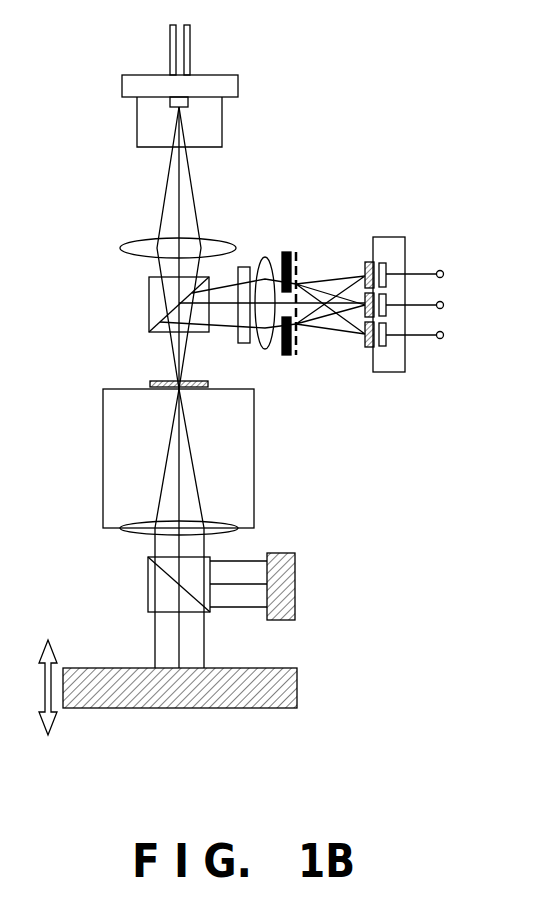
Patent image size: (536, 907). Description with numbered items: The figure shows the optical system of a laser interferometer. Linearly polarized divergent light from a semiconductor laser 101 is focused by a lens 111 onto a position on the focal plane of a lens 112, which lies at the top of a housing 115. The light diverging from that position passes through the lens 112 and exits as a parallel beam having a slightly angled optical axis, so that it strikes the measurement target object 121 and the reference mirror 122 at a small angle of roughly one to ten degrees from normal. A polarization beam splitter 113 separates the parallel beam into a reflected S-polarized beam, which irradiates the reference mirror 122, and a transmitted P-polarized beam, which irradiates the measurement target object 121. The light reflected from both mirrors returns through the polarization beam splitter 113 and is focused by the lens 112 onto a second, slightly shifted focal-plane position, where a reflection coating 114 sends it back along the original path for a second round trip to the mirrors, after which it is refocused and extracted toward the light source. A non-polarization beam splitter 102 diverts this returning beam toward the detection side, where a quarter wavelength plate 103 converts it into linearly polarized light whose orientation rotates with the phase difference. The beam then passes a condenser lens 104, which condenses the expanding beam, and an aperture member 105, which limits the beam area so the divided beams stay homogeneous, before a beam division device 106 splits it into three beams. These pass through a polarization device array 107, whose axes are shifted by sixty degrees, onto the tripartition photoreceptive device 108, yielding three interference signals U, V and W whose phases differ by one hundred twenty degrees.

The semiconductor laser 101 is at (222, 123).
The non-polarization beam splitter 102 is at (149, 303).
The quarter wavelength plate 103 is at (243, 343).
The condenser lens 104 is at (258, 258).
The aperture member 105 is at (284, 250).
The beam division device 106 is at (297, 252).
The polarization device array 107 is at (363, 262).
The tripartition photoreceptive device 108 is at (383, 258).
The lens 111 is at (140, 240).
The lens 112 is at (225, 523).
The polarization beam splitter 113 is at (148, 583).
The reflection coating 114 is at (150, 384).
The lens barrel 115 is at (103, 458).
The measurement target object 121 is at (262, 708).
The reference mirror 122 is at (295, 585).